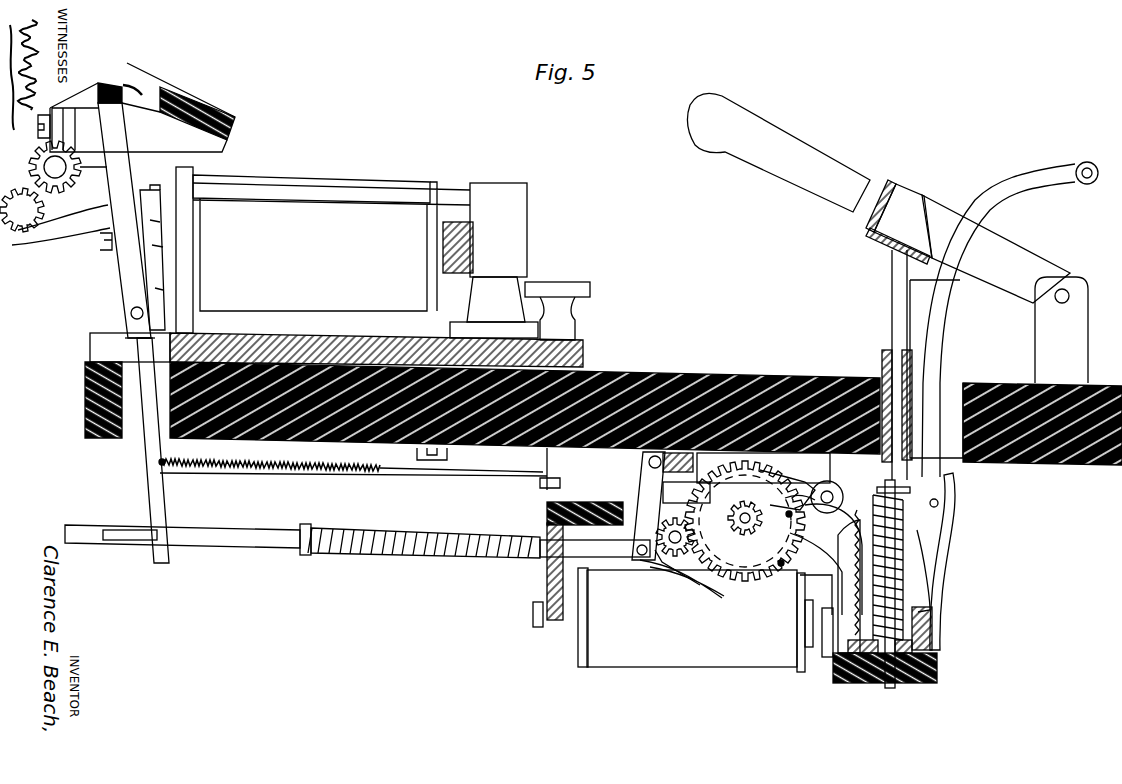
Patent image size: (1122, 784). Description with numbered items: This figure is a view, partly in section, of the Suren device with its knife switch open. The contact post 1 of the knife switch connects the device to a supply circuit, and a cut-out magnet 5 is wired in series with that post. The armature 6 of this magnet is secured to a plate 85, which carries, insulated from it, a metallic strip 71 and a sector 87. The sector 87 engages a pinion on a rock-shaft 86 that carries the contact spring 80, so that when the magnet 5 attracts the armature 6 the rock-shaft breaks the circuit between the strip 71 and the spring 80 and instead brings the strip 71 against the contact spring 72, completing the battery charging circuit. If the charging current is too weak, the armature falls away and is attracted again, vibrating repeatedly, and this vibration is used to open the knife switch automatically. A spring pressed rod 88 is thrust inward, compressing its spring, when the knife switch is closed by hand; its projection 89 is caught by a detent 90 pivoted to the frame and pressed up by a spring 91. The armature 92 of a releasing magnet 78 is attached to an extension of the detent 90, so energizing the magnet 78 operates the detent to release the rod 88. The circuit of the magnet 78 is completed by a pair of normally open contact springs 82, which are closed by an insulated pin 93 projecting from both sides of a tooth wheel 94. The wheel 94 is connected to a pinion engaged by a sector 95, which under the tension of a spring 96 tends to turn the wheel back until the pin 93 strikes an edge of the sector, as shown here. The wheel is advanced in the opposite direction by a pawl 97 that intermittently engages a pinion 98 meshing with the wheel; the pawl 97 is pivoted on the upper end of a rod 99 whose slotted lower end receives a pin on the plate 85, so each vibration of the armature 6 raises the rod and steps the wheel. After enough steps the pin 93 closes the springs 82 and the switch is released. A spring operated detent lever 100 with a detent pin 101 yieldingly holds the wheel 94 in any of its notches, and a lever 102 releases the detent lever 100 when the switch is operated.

The contact post 1 is at (958, 340).
The cut-out magnet 5 is at (338, 183).
The armature 6 is at (146, 262).
The metallic strip 71 is at (138, 92).
The contact spring 72 is at (150, 72).
The releasing magnet 78 is at (662, 667).
The contact spring 80 is at (104, 92).
The contact springs 82 is at (590, 505).
The plate 85 is at (122, 288).
The rock-shaft 86 is at (40, 178).
The sector 87 is at (32, 206).
The spring pressed rod 88 is at (895, 680).
The projection 89 is at (918, 500).
The detent 90 is at (855, 586).
The spring 91 is at (806, 486).
The armature 92 is at (828, 660).
The pin 93 is at (762, 517).
The tooth wheel 94 is at (683, 512).
The sector 95 is at (745, 521).
The spring 96 is at (864, 572).
The pawl 97 is at (672, 566).
The pinion 98 is at (668, 508).
The rod 99 is at (252, 530).
The detent lever 100 is at (823, 555).
The detent pin 101 is at (782, 568).
The lever 102 is at (930, 561).